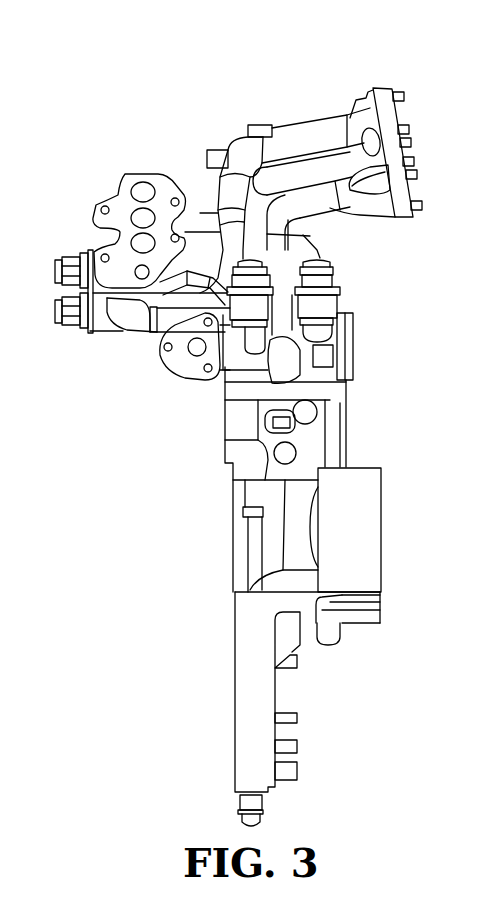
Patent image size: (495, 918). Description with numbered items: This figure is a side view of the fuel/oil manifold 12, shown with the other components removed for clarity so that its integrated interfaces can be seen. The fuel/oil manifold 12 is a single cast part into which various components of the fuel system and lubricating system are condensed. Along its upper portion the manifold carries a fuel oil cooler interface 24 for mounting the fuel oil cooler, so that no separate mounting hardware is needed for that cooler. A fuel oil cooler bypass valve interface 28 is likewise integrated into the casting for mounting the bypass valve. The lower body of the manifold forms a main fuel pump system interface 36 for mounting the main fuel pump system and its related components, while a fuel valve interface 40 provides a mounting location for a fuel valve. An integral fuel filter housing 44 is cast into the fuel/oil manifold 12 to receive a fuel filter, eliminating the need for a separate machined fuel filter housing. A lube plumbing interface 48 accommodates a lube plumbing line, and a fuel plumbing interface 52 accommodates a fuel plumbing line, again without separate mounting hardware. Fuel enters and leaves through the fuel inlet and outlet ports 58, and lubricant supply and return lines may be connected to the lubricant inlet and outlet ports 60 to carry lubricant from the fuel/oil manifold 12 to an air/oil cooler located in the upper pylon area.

The fuel/oil manifold 12 is at (181, 143).
The fuel oil cooler interface 24 is at (398, 118).
The FOC bypass valve interface 28 is at (125, 176).
The main fuel pump system interface 36 is at (235, 665).
The fuel valve interface 40 is at (302, 483).
The fuel filter housing 44 is at (364, 467).
The lube plumbing interface 48 is at (192, 368).
The fuel plumbing interface 52 is at (354, 337).
The fuel inlet and outlet ports 58 is at (55, 309).
The lubricant inlet and outlet ports 60 is at (270, 238).